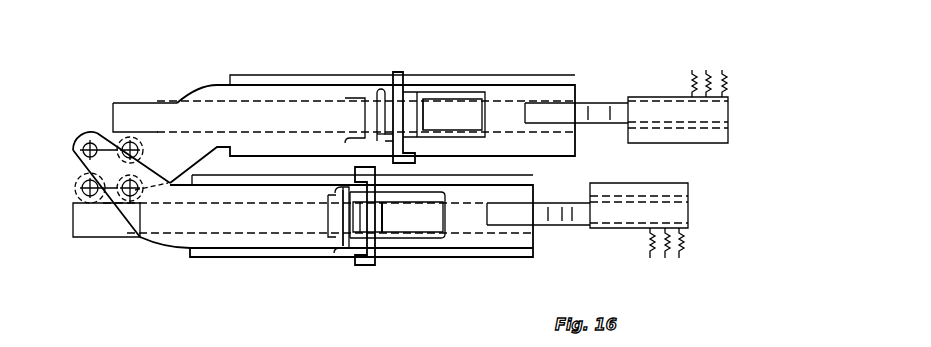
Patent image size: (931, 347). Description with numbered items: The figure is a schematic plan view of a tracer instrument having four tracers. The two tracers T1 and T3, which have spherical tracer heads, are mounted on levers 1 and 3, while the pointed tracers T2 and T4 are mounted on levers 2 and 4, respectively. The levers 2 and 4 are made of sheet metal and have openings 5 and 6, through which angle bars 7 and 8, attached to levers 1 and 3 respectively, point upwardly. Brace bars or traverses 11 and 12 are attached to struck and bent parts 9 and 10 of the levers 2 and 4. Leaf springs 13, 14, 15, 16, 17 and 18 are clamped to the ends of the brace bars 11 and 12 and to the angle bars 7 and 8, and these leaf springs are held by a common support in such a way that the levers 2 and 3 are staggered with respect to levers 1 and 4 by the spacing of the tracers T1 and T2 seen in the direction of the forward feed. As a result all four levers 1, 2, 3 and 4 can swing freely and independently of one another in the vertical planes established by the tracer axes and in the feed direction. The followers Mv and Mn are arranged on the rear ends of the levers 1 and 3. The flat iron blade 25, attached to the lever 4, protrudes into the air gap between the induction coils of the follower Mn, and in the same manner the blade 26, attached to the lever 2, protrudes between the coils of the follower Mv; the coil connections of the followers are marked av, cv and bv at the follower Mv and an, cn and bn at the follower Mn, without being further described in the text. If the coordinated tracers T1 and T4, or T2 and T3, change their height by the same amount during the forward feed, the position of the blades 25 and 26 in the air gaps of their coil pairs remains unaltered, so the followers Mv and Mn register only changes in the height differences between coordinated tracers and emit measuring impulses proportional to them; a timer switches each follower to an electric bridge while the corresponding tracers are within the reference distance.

The lever 1 is at (85, 227).
The lever 2 is at (236, 75).
The lever 3 is at (152, 110).
The lever 4 is at (225, 250).
The opening 5 is at (452, 96).
The opening 6 is at (422, 233).
The angle bar 7 is at (432, 220).
The angle bar 8 is at (470, 110).
The struck and bent part 9 is at (364, 118).
The struck and bent part 10 is at (328, 215).
The brace bar 11 is at (381, 89).
The brace bar 12 is at (354, 255).
The leaf spring 13 is at (405, 70).
The leaf spring 14 is at (398, 143).
The leaf spring 15 is at (342, 237).
The leaf spring 16 is at (370, 265).
The leaf spring 17 is at (405, 110).
The leaf spring 18 is at (380, 214).
The flat iron blade 25 is at (562, 215).
The blade 26 is at (600, 112).
The tracer T1 is at (90, 204).
The tracer T2 is at (133, 205).
The tracer T3 is at (130, 141).
The tracer T4 is at (88, 143).
The follower Mv is at (642, 112).
The follower Mn is at (633, 210).
The front motor terminal a av is at (688, 76).
The front motor terminal c cv is at (706, 76).
The front motor terminal b bv is at (724, 76).
The rear motor terminal a an is at (646, 256).
The rear motor terminal c cn is at (664, 256).
The rear motor terminal b bn is at (682, 256).